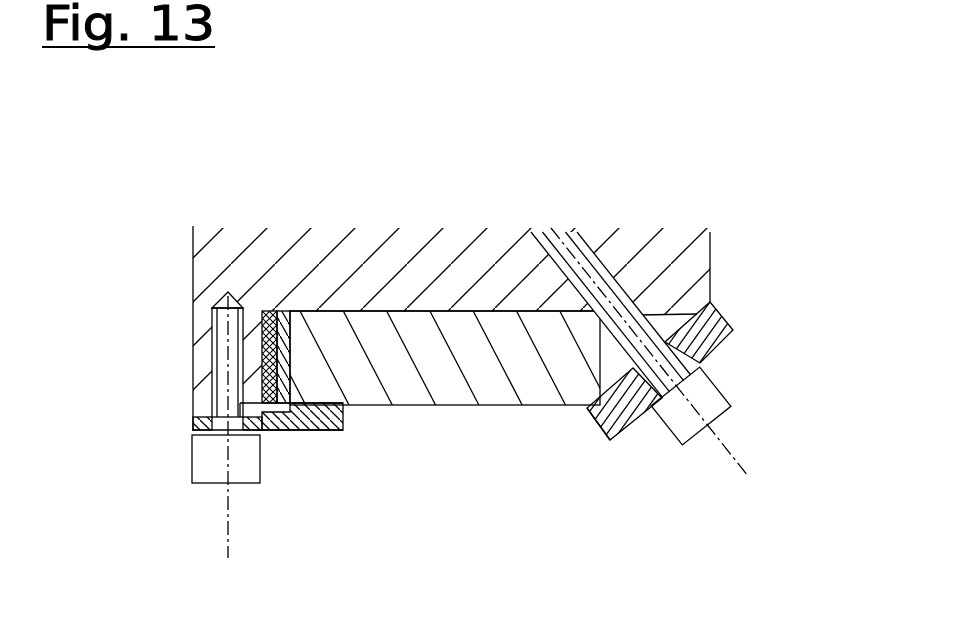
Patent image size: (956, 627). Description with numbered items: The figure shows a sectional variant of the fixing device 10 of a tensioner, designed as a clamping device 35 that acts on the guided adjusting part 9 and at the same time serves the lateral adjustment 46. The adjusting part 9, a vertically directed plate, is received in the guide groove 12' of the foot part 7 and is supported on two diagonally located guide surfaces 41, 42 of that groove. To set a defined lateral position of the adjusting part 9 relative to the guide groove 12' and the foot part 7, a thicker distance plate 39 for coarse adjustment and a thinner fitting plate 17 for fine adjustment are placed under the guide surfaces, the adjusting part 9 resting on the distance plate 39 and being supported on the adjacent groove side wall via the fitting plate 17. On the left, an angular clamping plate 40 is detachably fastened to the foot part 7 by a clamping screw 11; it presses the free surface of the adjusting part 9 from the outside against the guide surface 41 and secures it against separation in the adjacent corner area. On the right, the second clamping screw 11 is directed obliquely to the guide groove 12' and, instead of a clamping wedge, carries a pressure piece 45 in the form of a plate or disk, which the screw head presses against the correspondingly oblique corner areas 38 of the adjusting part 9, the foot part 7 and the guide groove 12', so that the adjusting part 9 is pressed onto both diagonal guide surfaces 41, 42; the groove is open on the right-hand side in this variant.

The foot part 7 is at (200, 272).
The adjusting part 9 is at (448, 400).
The fixing device 10 is at (714, 216).
The clamping device 35 is at (714, 216).
The clamping screw 11 is at (677, 413).
The guide groove 12' is at (611, 277).
The fitting plate 17 is at (268, 427).
The corner area 38 is at (700, 298).
The distance plate 39 is at (297, 430).
The clamping plate 40 is at (327, 430).
The guide surface 41 is at (468, 311).
The guide surface 42 is at (341, 278).
The pressure piece 45 is at (613, 418).
The lateral adjustment 46 is at (302, 210).